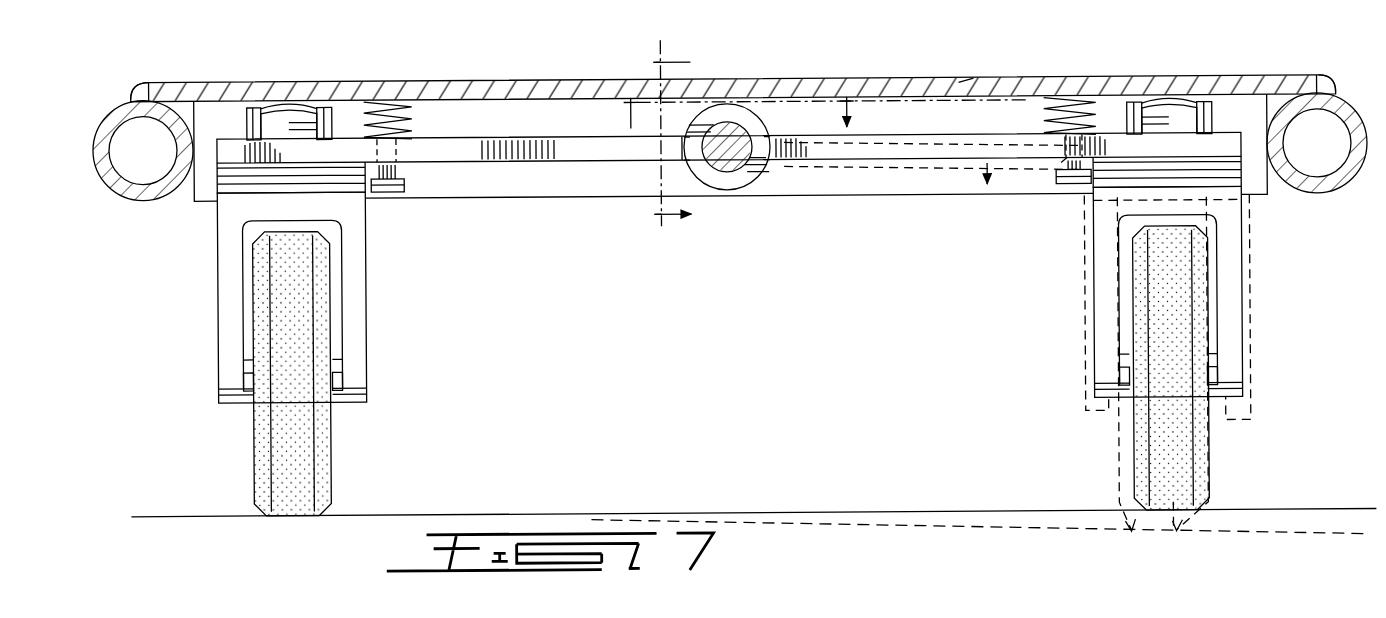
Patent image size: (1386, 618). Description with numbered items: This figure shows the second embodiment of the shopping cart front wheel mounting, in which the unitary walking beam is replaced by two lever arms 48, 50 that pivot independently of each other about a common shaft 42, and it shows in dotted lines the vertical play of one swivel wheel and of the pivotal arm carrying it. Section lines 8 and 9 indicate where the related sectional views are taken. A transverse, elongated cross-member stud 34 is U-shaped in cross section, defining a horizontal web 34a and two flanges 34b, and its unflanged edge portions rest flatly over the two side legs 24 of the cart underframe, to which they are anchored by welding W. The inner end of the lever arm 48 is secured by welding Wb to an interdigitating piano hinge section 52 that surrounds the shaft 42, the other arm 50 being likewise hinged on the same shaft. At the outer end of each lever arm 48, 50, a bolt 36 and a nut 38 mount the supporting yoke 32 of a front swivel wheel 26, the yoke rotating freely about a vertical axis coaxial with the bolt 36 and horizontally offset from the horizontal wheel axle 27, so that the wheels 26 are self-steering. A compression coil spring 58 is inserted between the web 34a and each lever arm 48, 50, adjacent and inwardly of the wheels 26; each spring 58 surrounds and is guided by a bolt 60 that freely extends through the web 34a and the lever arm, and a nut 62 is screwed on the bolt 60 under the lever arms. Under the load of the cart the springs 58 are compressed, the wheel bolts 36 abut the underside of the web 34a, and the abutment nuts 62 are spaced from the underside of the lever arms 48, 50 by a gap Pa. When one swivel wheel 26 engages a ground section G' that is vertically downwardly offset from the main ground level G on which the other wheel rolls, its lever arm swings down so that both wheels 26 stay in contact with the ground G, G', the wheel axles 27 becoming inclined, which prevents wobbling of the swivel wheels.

The welding W is at (130, 100).
The side legs 24 is at (137, 190).
The front wheels 26 is at (282, 294).
The wheel axle 27 is at (247, 374).
The supporting yoke 32 is at (227, 262).
The cross-member stud 34 is at (838, 74).
The web 34a is at (960, 82).
The flanges 34b is at (600, 177).
The bolt 36 is at (293, 103).
The nut 38 is at (250, 120).
The common shaft 42 is at (733, 162).
The lever arm 48 is at (540, 147).
The lever arm 50 is at (940, 150).
The piano hinge section 52 is at (755, 168).
The compression coil spring 58 is at (405, 112).
The bolt 60 is at (398, 174).
The nut 62 is at (383, 194).
The section line 8- 8 is at (734, 117).
The section line 9- 9 is at (672, 142).
The gap Pa is at (1062, 165).
The welding Wb is at (685, 175).
The main ground level G is at (753, 485).
The ground section G' is at (979, 491).